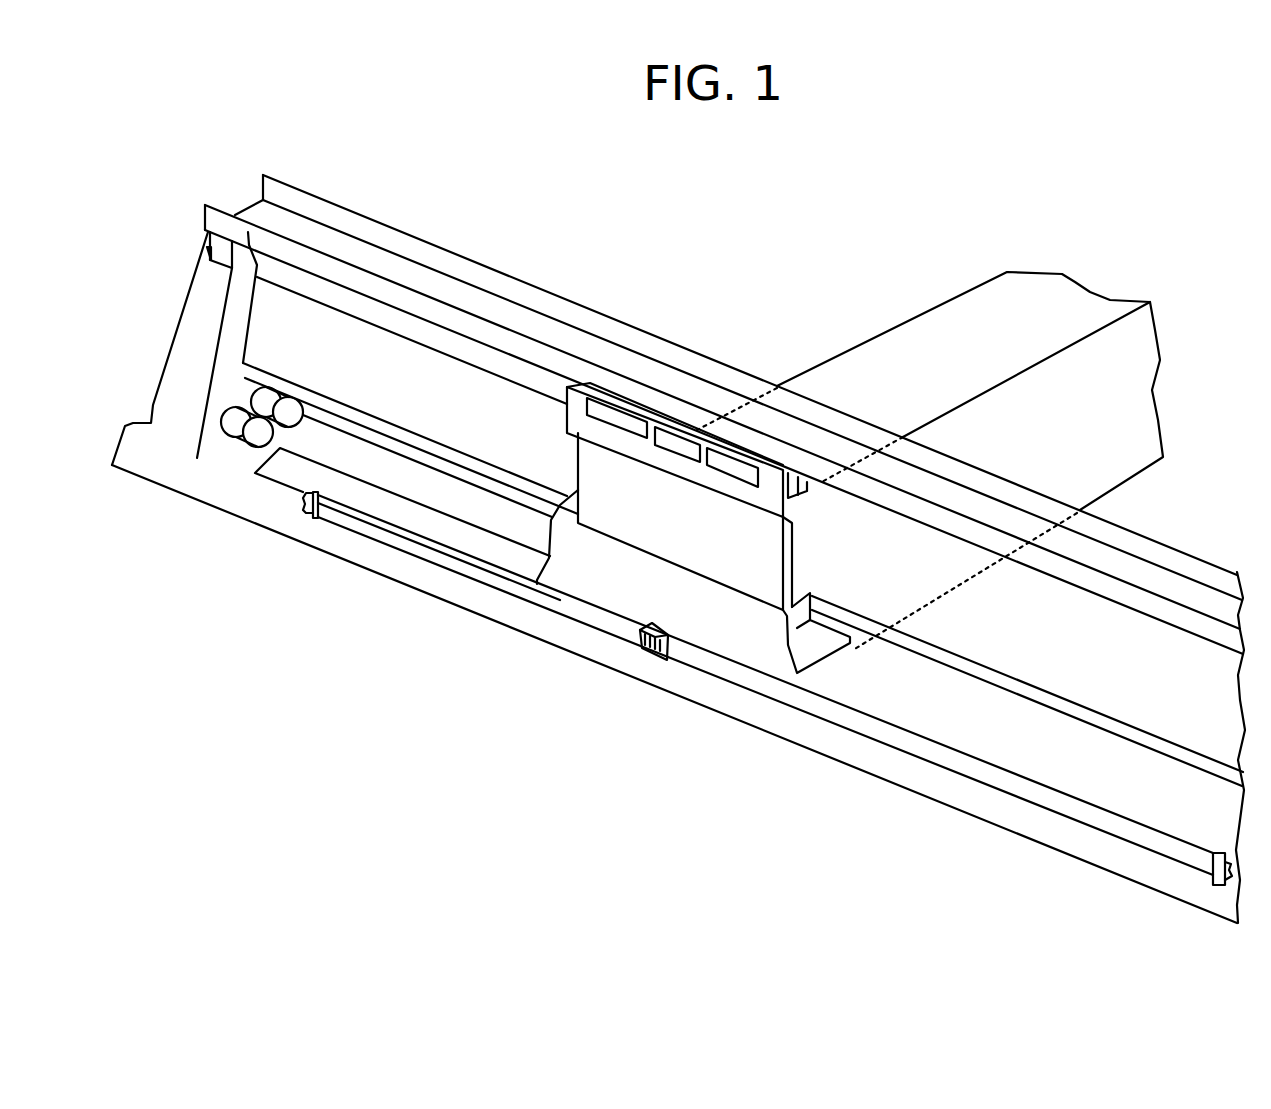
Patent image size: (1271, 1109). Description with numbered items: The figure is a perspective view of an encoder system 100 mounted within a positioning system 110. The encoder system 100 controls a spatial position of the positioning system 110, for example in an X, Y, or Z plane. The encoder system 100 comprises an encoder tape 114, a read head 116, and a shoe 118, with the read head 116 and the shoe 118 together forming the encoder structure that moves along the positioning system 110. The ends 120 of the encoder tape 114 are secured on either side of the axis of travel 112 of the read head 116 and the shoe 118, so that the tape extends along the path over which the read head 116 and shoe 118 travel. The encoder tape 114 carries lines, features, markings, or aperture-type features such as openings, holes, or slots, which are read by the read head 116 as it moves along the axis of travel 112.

The encoder system 100 is at (446, 750).
The positioning system 110 is at (1217, 537).
The axis of travel 112 is at (692, 307).
The encoder tape 114 is at (433, 562).
The read head 116 is at (648, 653).
The shoe 118 is at (668, 663).
The ends of the encoder tape 120 is at (300, 527).